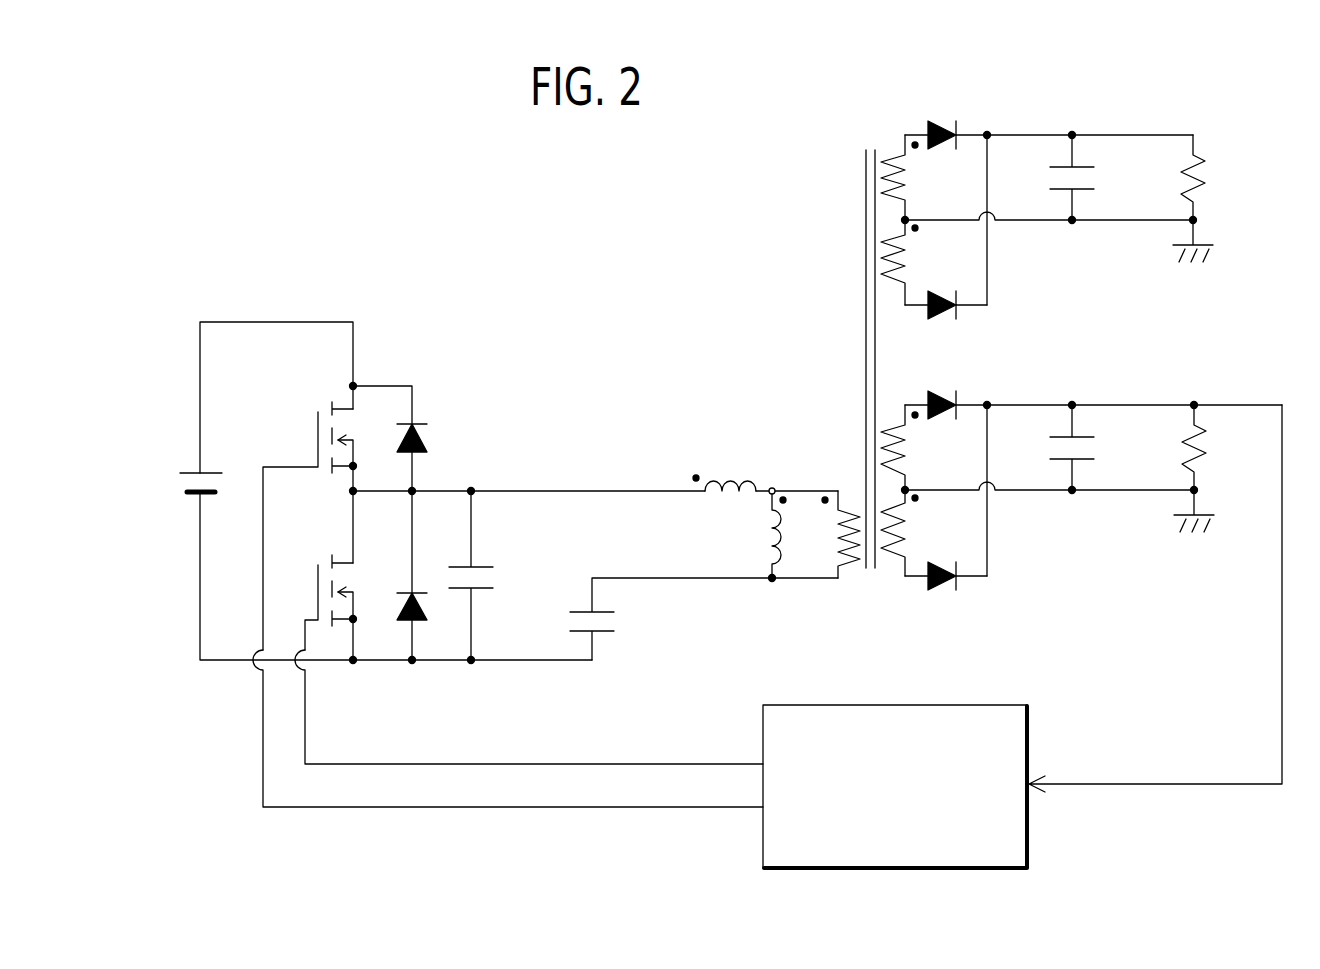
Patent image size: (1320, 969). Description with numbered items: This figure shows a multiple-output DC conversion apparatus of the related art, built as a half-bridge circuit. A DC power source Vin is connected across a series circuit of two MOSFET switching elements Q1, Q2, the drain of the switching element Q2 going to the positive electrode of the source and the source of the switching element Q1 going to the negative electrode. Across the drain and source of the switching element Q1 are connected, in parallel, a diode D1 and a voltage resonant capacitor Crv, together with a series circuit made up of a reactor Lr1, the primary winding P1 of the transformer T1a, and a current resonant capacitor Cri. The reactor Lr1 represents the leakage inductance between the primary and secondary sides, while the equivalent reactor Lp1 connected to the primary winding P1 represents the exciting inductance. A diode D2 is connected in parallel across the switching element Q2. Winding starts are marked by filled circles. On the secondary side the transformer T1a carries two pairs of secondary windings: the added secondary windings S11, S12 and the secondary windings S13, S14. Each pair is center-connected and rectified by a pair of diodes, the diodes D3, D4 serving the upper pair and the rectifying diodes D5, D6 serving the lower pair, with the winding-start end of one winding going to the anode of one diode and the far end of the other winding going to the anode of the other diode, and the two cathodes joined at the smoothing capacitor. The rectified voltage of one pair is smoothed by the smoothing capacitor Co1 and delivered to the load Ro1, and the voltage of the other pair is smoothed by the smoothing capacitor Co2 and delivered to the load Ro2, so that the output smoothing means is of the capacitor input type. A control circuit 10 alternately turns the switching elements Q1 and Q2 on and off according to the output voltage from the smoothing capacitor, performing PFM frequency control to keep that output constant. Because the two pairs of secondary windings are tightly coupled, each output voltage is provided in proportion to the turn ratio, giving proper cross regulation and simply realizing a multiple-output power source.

The DC power source Vin is at (215, 502).
The switching element Q1 is at (321, 590).
The switching element Q2 is at (308, 513).
The diode D1 is at (427, 575).
The diode D2 is at (405, 438).
The voltage resonant capacitor Crv is at (495, 575).
The current resonant capacitor Cri is at (704, 619).
The reactor Lr1 is at (724, 465).
The equivalent reactor Lp1 is at (775, 535).
The primary winding P1 is at (832, 534).
The transformer T1a is at (874, 341).
The secondary winding S11 is at (919, 177).
The secondary winding S12 is at (919, 261).
The secondary winding S13 is at (919, 447).
The secondary winding S14 is at (919, 532).
The diode D3 is at (1049, 120).
The diode D4 is at (946, 322).
The rectifying diode D5 is at (1093, 390).
The rectifying diode D6 is at (946, 593).
The smoothing capacitor Co1 is at (1098, 177).
The load Ro1 is at (1216, 198).
The smoothing capacitor Co2 is at (1098, 447).
The load Ro2 is at (1216, 468).
The control circuit 10 is at (1027, 823).